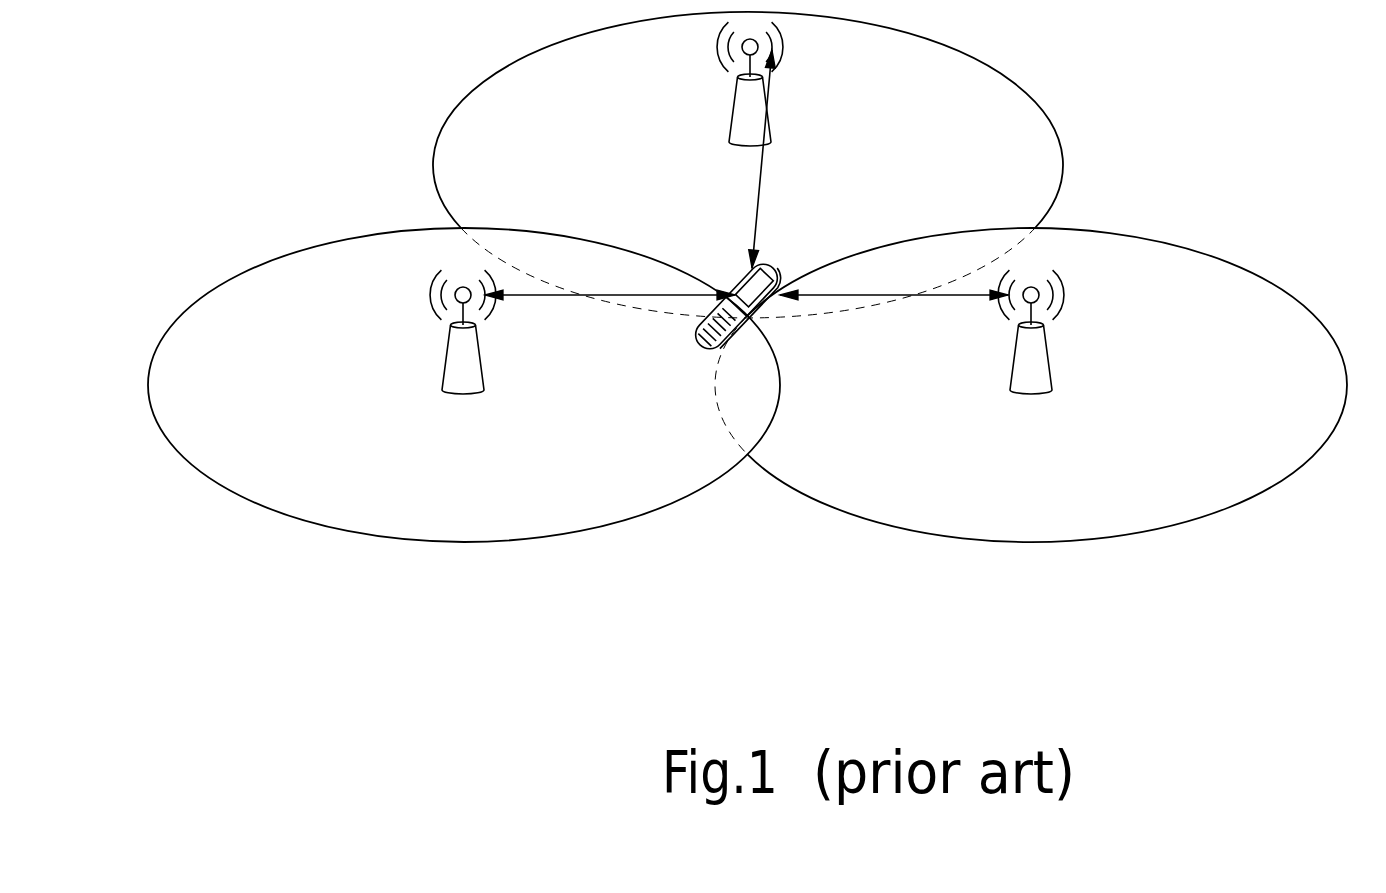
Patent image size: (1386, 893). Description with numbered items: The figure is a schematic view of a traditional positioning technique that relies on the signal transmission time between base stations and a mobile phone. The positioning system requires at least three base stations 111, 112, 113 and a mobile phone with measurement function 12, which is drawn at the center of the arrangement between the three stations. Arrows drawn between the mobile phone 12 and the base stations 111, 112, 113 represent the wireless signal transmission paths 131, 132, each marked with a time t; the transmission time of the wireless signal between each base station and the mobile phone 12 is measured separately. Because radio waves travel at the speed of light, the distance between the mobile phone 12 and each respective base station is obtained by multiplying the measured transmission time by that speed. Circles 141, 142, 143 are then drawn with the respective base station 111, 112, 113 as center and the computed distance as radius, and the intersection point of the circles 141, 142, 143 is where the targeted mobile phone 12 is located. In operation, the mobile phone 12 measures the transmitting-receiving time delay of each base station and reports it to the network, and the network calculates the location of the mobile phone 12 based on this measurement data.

The mobile phone with measurement function 12 is at (742, 337).
The base station 111 is at (772, 128).
The base station 112 is at (453, 367).
The base station 113 is at (1050, 368).
The signal transmission distance 131 is at (757, 222).
The signal transmission distance 132 is at (537, 293).
The circle 141 is at (1012, 82).
The circle 142 is at (388, 537).
The circle 143 is at (1020, 540).